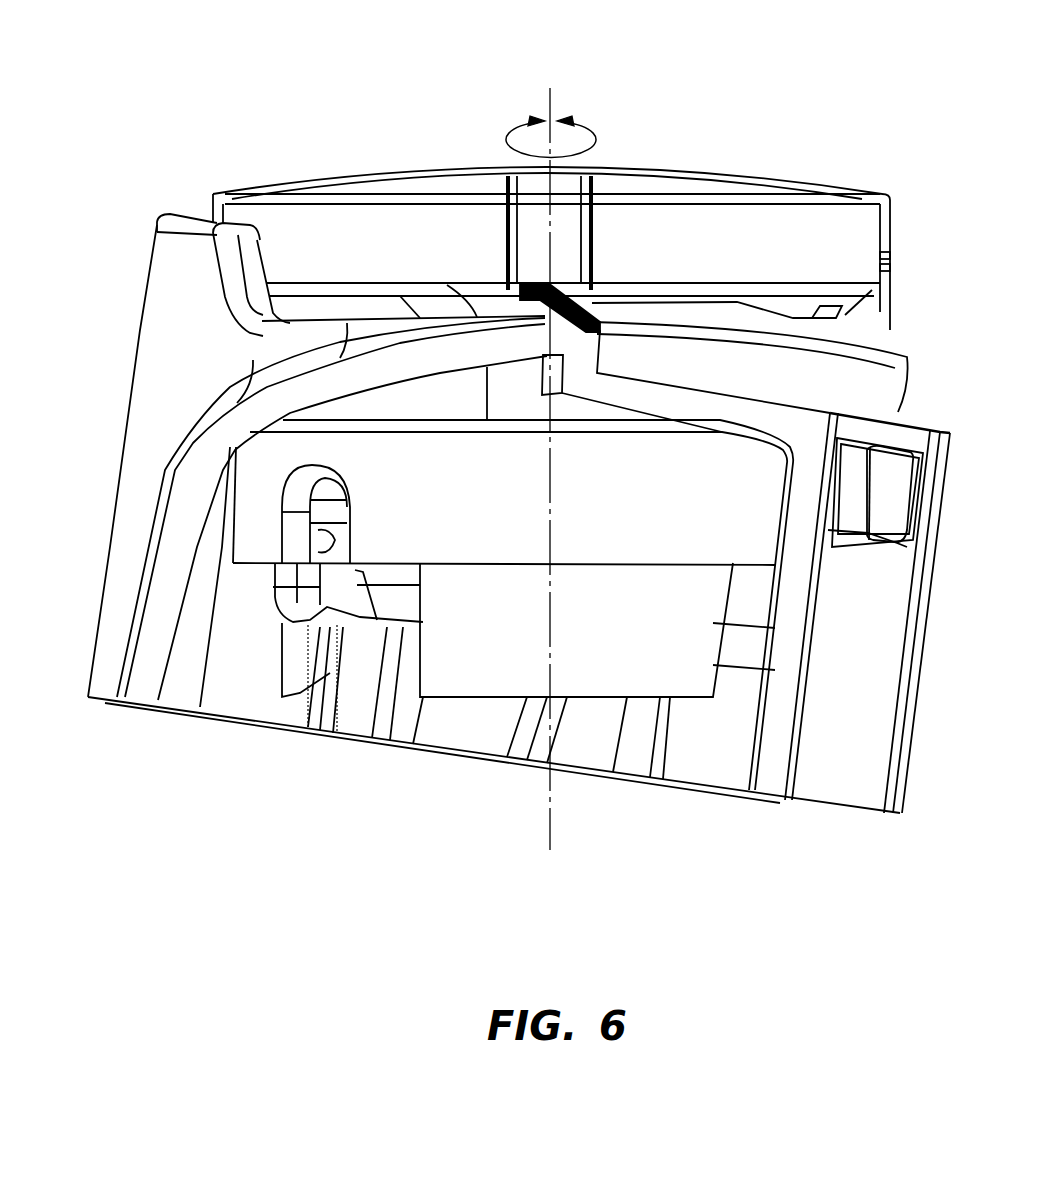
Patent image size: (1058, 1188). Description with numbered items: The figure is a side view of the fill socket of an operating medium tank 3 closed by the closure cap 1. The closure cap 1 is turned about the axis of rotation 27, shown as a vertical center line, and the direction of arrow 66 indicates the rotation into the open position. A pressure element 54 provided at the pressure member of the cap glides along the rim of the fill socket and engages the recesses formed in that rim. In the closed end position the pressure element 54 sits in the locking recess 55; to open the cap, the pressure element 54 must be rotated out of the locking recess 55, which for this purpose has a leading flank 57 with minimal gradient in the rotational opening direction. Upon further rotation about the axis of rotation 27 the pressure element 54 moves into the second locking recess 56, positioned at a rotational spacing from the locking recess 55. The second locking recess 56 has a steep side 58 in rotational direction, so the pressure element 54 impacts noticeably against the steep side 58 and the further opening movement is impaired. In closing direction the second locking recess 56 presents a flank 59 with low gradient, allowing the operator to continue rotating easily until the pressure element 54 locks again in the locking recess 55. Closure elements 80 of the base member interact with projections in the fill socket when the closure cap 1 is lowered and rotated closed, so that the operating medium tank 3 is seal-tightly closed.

The closure cap 1 is at (233, 118).
The operating medium tank 3 is at (178, 389).
The axis of rotation 27 is at (545, 121).
The pressure element 54 is at (500, 302).
The locking recess 55 is at (452, 303).
The second locking recess 56 is at (803, 307).
The leading flank 57 is at (547, 290).
The steep side 58 is at (821, 302).
The flank 59 is at (775, 305).
The arrow 66 is at (580, 118).
The closure elements 80 is at (288, 580).